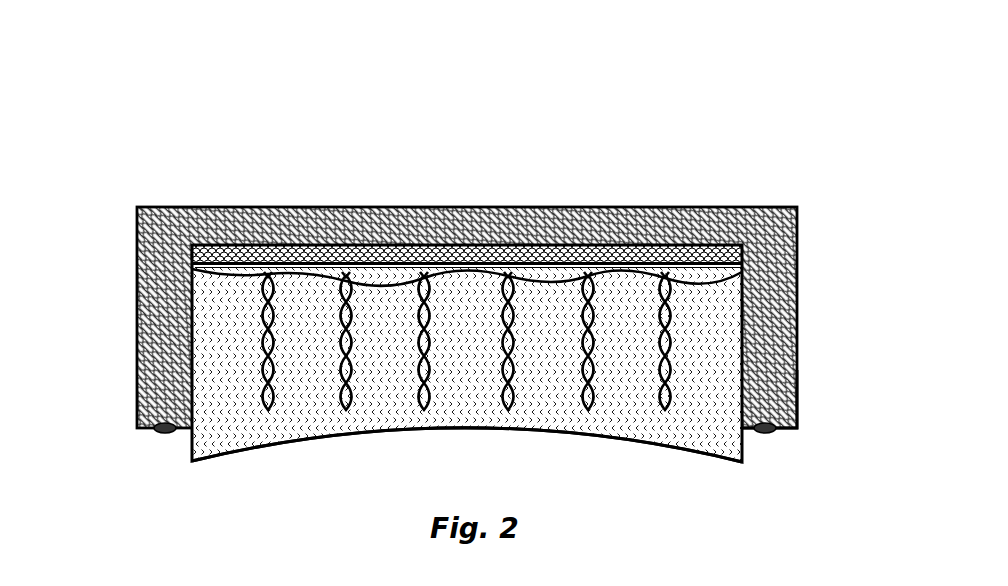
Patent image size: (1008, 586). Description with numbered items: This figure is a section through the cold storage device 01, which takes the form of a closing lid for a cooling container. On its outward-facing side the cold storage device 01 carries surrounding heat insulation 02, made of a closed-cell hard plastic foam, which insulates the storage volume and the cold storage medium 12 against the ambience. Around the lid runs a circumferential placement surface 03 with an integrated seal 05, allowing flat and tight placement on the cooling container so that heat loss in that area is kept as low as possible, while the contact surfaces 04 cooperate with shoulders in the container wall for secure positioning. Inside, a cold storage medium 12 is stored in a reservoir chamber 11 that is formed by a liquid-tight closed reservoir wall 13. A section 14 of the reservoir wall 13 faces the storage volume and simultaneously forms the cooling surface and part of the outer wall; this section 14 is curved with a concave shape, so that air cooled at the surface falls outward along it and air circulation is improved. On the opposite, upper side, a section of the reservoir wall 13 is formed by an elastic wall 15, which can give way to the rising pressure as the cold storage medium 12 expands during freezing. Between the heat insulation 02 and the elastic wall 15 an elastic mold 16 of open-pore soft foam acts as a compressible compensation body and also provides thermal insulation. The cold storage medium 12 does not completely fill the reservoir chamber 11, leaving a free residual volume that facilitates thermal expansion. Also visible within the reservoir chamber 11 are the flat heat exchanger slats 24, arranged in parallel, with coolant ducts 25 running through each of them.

The cold storage device 01 is at (469, 286).
The heat insulation 02 is at (495, 313).
The placement surface 03 is at (773, 431).
The contact surfaces 04 is at (192, 445).
The seal 05 is at (793, 430).
The reservoir chamber 11 is at (370, 260).
The cold storage medium 12 is at (401, 377).
The reservoir wall 13 is at (401, 322).
The section of the reservoir wall 14 is at (577, 433).
The elastic wall 15 is at (312, 262).
The elastic mold 16 is at (500, 252).
The heat exchanger slats 24 is at (448, 404).
The coolant ducts 25 is at (345, 393).